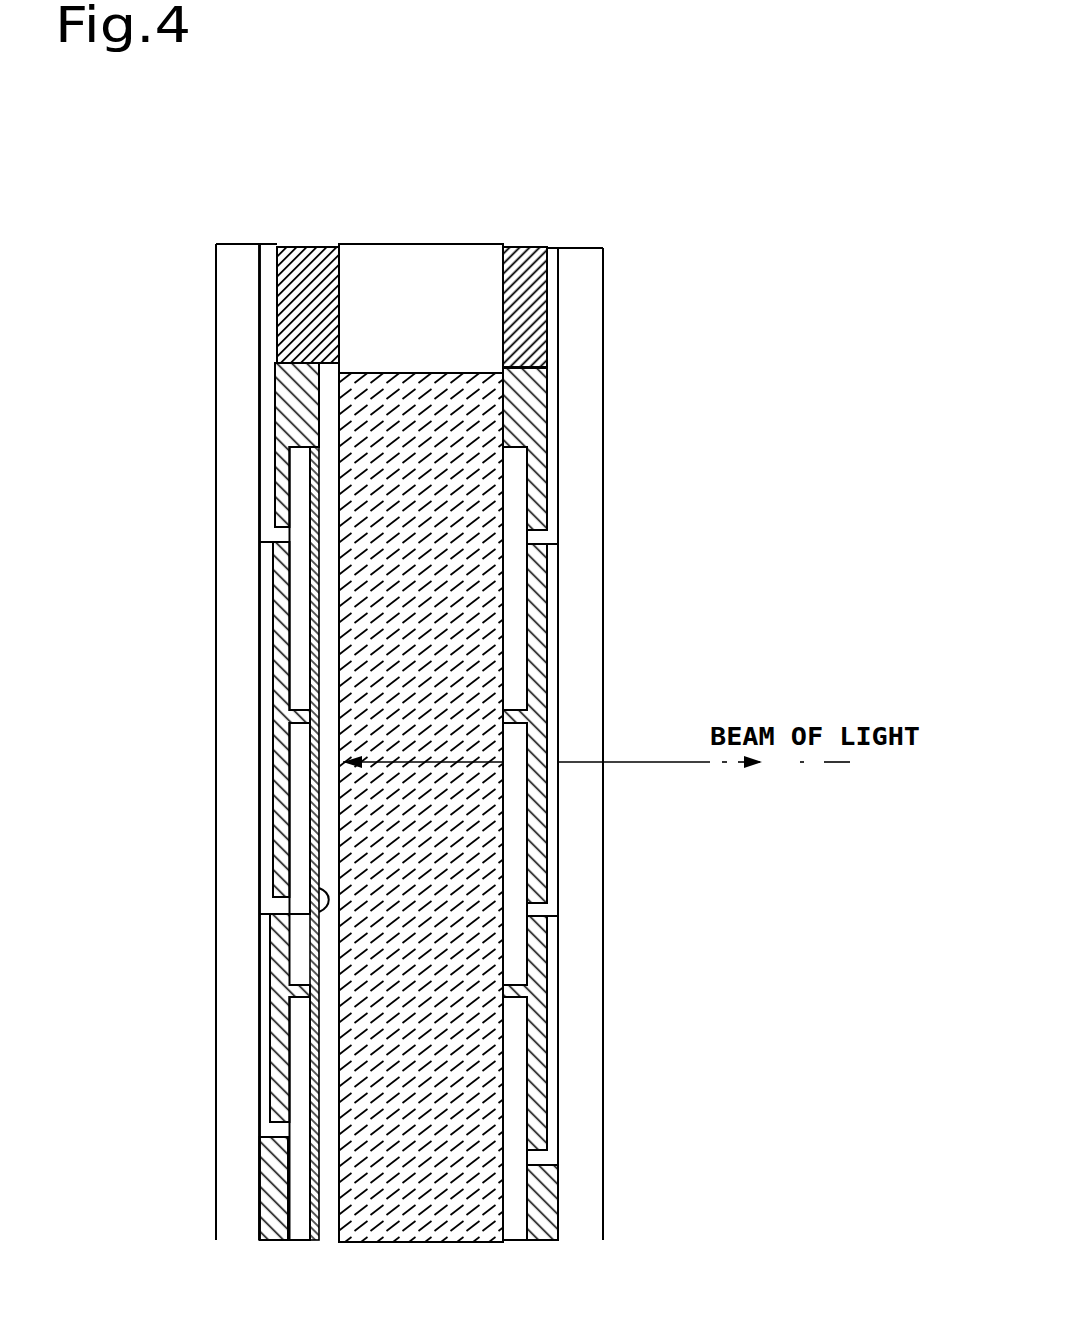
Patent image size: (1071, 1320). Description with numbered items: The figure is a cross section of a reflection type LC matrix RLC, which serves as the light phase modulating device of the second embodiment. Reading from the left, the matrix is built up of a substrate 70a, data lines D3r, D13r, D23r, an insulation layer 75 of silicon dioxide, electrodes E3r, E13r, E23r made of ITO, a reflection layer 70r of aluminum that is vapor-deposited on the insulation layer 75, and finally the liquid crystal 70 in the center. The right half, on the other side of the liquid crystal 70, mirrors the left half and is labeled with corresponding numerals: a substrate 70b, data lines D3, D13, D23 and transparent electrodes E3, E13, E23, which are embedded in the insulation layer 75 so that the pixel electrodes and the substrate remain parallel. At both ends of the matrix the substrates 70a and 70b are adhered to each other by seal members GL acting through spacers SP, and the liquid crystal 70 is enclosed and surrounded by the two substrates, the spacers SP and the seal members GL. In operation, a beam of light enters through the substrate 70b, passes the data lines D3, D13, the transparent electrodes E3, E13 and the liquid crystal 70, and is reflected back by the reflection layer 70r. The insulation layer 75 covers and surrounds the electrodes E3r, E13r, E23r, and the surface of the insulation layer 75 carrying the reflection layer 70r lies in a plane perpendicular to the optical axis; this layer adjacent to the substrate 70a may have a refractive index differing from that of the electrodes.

The reflection type LC matrix RLC is at (670, 180).
The spacer SP is at (400, 268).
The seal member GL is at (312, 258).
The liquid crystal 70 is at (450, 1165).
The substrate 70a is at (240, 362).
The substrate 70b is at (587, 328).
The reflection layer 70r is at (332, 430).
The insulation layer 75 is at (300, 913).
The data line D3r is at (268, 452).
The data line D13r is at (265, 705).
The data line D23r is at (263, 1037).
The electrode E3r is at (298, 606).
The electrode E13r is at (298, 840).
The electrode E23r is at (300, 1181).
The data line D3 is at (552, 460).
The data line D13 is at (550, 598).
The data line D23 is at (552, 1110).
The transparent electrode E3 is at (517, 670).
The transparent electrode E13 is at (512, 863).
The transparent electrode E23 is at (512, 1042).